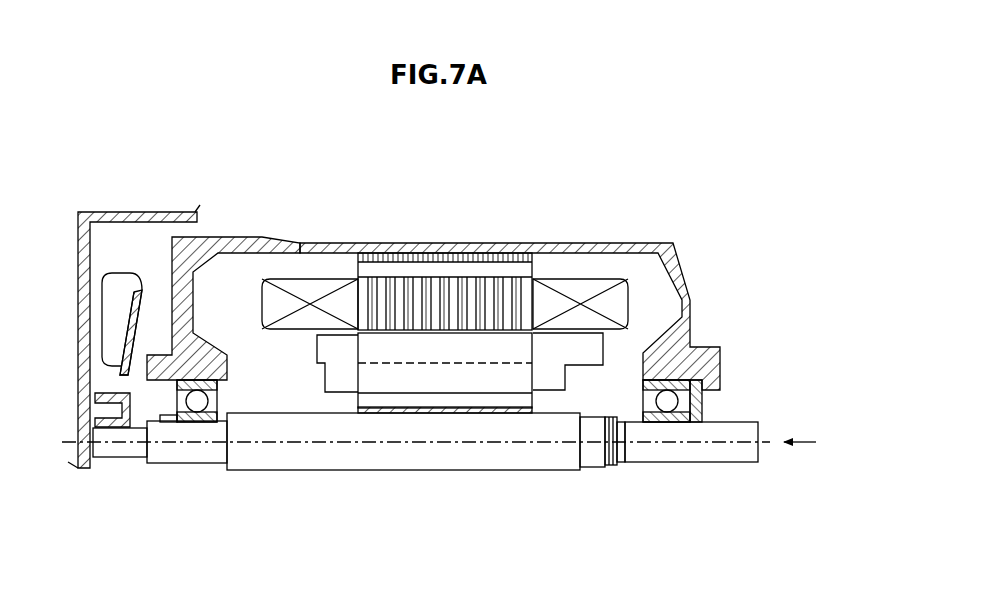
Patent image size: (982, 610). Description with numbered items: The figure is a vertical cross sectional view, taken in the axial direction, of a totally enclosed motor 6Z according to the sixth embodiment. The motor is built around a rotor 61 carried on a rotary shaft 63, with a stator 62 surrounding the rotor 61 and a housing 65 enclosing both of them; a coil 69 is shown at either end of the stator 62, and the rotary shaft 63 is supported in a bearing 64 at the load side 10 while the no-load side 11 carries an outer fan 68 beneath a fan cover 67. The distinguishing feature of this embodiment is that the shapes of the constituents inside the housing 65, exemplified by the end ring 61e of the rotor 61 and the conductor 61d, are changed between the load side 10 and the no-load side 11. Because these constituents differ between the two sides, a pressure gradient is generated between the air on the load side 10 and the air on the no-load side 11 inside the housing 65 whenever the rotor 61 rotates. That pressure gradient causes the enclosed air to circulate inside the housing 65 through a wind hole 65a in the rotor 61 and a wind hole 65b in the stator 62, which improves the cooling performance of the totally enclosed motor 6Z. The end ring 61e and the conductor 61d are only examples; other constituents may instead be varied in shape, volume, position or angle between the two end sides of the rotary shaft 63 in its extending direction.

The totally enclosed motor 6Z is at (740, 243).
The fan cover 67 is at (152, 212).
The outer fan 68 is at (120, 293).
The no-load side 11 is at (213, 287).
The housing 65 is at (688, 283).
The load side 10 is at (652, 278).
The bearing 64 is at (667, 402).
The coil 69 is at (345, 305).
The stator 62 is at (433, 252).
The wind hole 65b is at (503, 262).
The rotor 61 is at (489, 378).
The wind hole 65a is at (422, 406).
The end ring 61e is at (340, 380).
The conductor 61d is at (582, 352).
The rotary shaft 63 is at (718, 452).